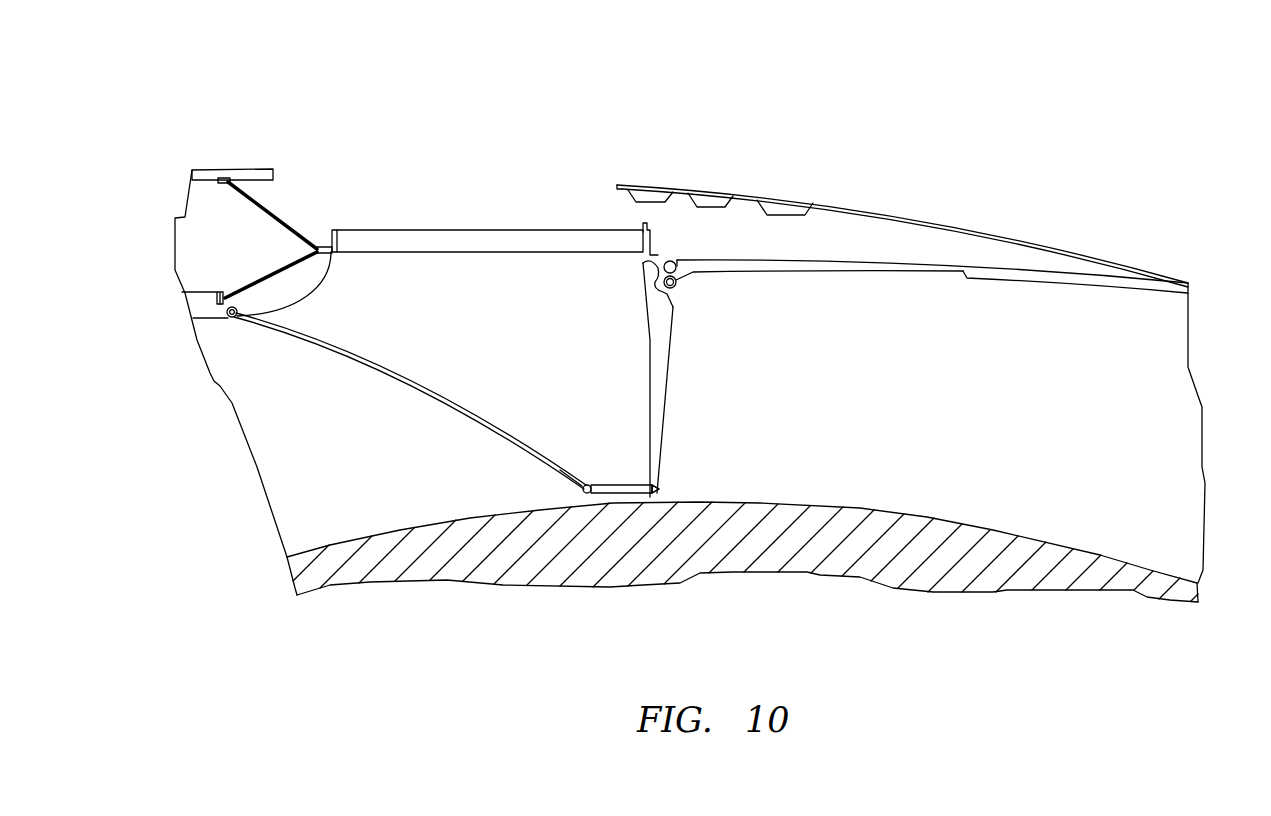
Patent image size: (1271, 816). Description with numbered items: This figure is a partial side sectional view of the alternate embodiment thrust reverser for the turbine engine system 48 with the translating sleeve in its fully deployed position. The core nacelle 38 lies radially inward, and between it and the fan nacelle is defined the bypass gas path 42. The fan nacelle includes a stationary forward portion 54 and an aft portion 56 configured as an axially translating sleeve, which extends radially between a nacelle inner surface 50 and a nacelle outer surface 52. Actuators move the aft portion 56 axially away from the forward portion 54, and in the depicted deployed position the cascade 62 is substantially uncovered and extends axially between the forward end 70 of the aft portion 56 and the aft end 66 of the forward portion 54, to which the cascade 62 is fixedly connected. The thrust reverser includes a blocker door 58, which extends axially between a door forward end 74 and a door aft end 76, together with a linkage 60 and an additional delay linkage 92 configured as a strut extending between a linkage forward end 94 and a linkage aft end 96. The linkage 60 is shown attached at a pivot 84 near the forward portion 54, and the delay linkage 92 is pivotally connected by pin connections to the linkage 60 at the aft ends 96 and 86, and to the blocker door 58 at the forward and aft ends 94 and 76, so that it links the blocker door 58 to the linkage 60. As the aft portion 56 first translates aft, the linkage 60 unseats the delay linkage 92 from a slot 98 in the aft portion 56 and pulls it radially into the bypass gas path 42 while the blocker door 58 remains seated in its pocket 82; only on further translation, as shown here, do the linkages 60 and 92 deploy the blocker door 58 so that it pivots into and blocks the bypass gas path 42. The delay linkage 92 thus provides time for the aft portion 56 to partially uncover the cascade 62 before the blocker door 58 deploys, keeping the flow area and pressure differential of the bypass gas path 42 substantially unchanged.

The core nacelle 38 is at (808, 563).
The bypass gas path 42 is at (347, 451).
The turbine engine system 48 is at (675, 136).
The nacelle inner surface 50 is at (1062, 283).
The nacelle outer surface 52 is at (1044, 244).
The stationary forward portion 54 is at (210, 170).
The aft portion 56 is at (915, 213).
The blocker door 58 is at (668, 382).
The linkage 60 is at (434, 397).
The cascade 62 is at (458, 230).
The aft end 66 is at (273, 170).
The forward end 70 is at (617, 185).
The door forward end 74 is at (680, 287).
The door aft end 76 is at (660, 490).
The pocket 82 is at (852, 270).
The pivot 84 is at (228, 320).
The aft end 86 is at (580, 496).
The delay linkage 92 is at (620, 483).
The linkage forward end 94 is at (660, 490).
The linkage aft end 96 is at (585, 482).
The slot 98 is at (933, 272).